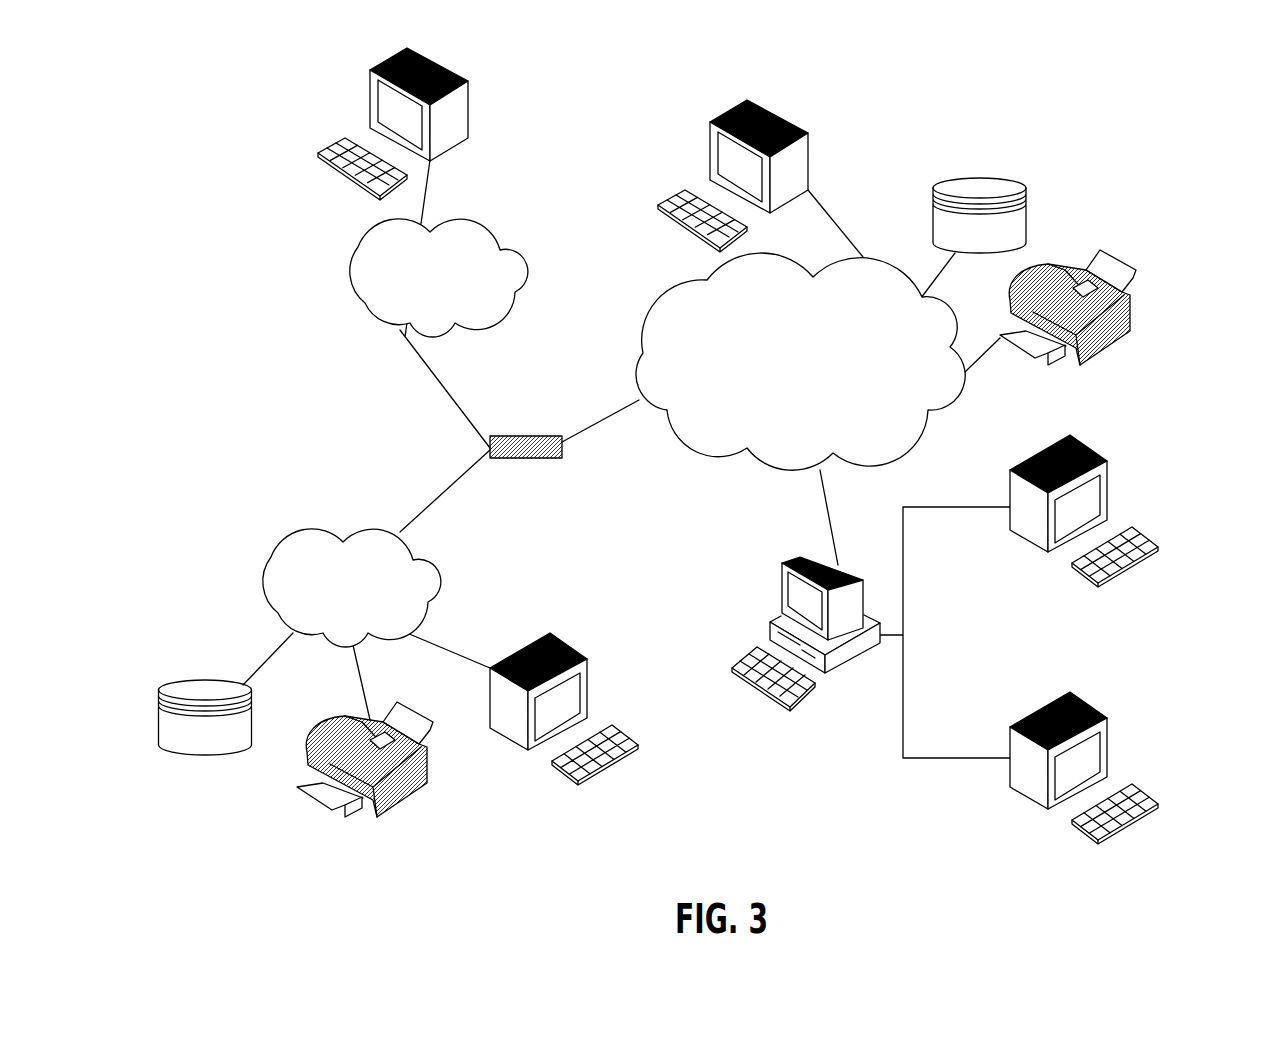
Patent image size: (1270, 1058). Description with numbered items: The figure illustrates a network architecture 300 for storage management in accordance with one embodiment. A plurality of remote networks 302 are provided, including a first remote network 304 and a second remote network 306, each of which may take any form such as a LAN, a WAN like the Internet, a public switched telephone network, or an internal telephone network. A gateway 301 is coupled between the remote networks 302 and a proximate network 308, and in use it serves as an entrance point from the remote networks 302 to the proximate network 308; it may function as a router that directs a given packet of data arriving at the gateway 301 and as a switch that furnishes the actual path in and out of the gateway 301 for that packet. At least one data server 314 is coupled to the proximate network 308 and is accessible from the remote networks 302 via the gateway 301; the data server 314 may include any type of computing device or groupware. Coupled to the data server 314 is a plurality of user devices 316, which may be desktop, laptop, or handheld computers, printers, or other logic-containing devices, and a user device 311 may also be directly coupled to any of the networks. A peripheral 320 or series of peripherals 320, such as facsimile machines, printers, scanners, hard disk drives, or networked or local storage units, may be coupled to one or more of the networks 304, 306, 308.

The network architecture 300 is at (1152, 92).
The gateway 301 is at (525, 434).
The remote networks 302 is at (297, 470).
The first remote network 304 is at (268, 560).
The second remote network 306 is at (527, 283).
The proximate network 308 is at (925, 423).
The user device 311 is at (808, 168).
The data server 314 is at (780, 590).
The user devices 316 is at (468, 115).
The peripheral 320 is at (980, 175).